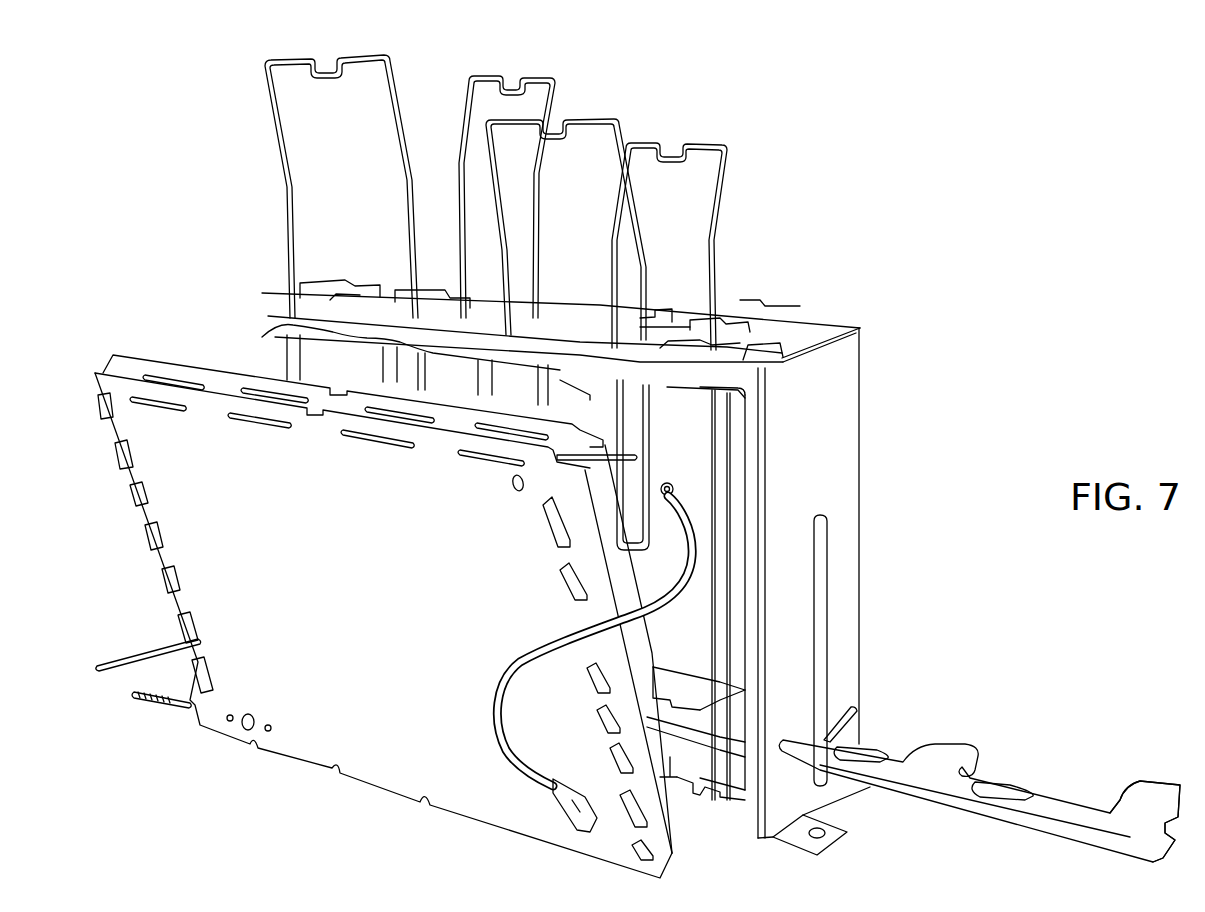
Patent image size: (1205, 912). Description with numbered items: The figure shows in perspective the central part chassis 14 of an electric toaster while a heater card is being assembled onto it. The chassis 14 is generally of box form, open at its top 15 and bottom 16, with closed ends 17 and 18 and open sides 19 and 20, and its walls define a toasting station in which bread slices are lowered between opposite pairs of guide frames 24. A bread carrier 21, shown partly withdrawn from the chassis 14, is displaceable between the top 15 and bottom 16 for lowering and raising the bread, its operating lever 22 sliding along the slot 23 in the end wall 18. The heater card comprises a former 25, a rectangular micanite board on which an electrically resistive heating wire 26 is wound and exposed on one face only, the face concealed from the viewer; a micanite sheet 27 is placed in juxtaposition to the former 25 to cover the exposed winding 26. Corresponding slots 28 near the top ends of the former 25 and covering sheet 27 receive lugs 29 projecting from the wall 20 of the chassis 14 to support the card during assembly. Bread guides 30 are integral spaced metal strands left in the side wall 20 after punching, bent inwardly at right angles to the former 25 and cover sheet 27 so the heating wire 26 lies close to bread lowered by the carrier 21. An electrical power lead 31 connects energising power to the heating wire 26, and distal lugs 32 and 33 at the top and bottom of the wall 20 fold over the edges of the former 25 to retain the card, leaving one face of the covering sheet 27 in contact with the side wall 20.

The chassis 14 is at (721, 552).
The top 15 is at (790, 333).
The bottom 16 is at (695, 688).
The closed end 17 is at (322, 297).
The closed end 18 is at (850, 430).
The open side 19 is at (673, 340).
The open side 20 is at (693, 480).
The bread carrier 21 is at (968, 755).
The operating lever 22 is at (1143, 790).
The slot 23 is at (828, 578).
The guide frames 24 is at (542, 76).
The former 25 is at (385, 595).
The heating wire 26 is at (145, 508).
The micanite sheet 27 is at (138, 367).
The slots 28 is at (232, 415).
The lugs 29 is at (280, 335).
The bread guides 30 is at (393, 373).
The electrical power lead 31 is at (513, 672).
The distal lug 32 is at (450, 327).
The distal lug 33 is at (713, 793).